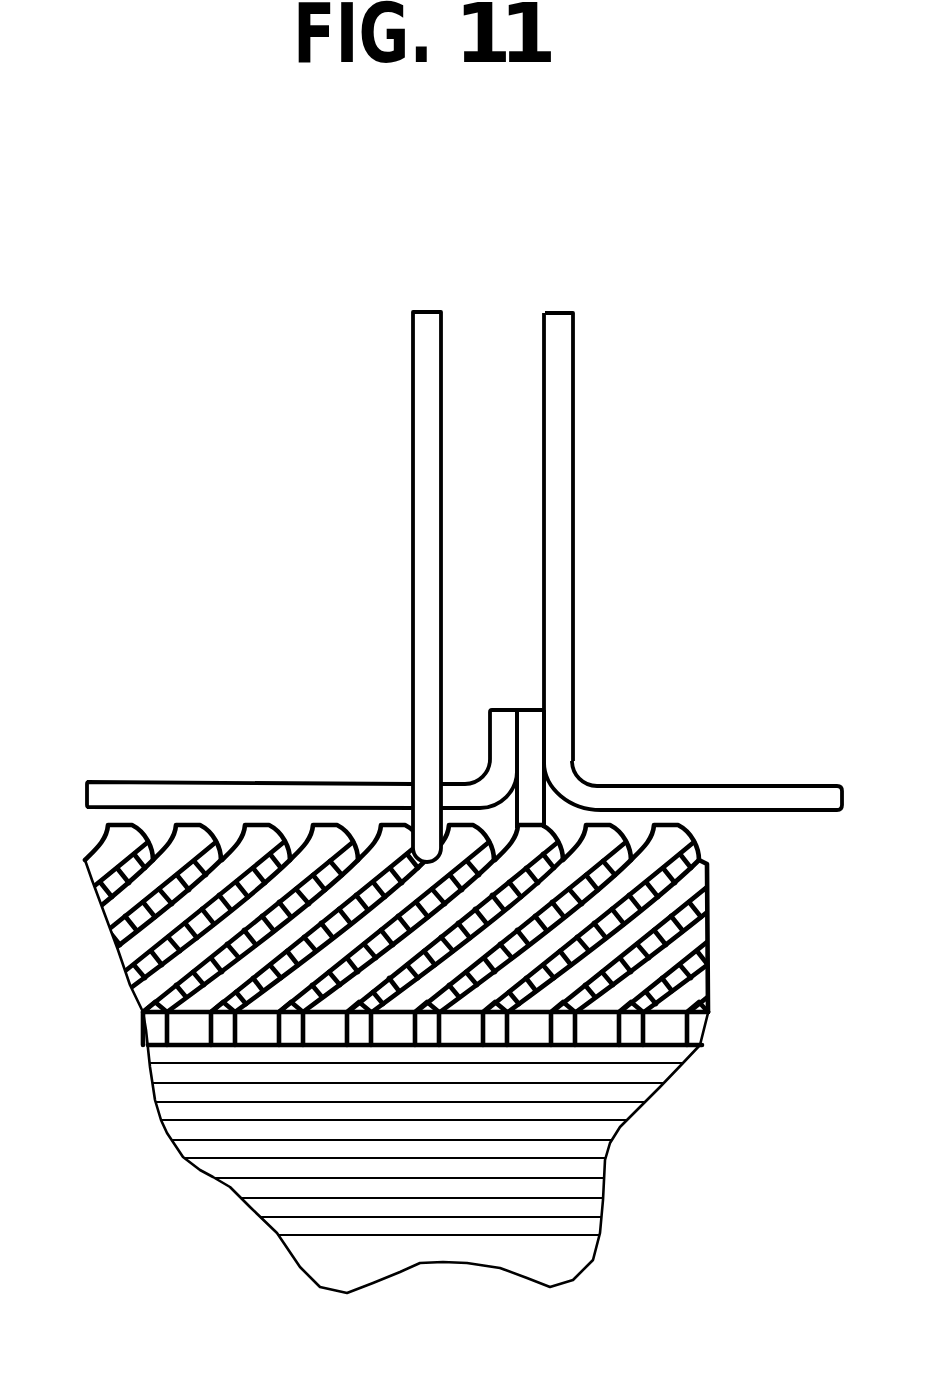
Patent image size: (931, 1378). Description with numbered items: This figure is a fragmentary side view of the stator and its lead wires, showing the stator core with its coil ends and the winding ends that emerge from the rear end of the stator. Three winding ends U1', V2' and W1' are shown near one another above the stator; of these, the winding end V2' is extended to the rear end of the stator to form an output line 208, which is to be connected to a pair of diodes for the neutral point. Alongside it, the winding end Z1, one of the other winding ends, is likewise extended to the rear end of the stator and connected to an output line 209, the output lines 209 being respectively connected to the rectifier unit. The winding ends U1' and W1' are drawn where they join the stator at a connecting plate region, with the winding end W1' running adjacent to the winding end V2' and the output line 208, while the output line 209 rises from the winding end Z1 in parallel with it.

The output line 208 is at (673, 570).
The output lines 209 is at (319, 587).
The winding end Z1 is at (430, 547).
The winding end V2' is at (647, 570).
The winding end U1' is at (498, 690).
The winding end W1' is at (643, 751).